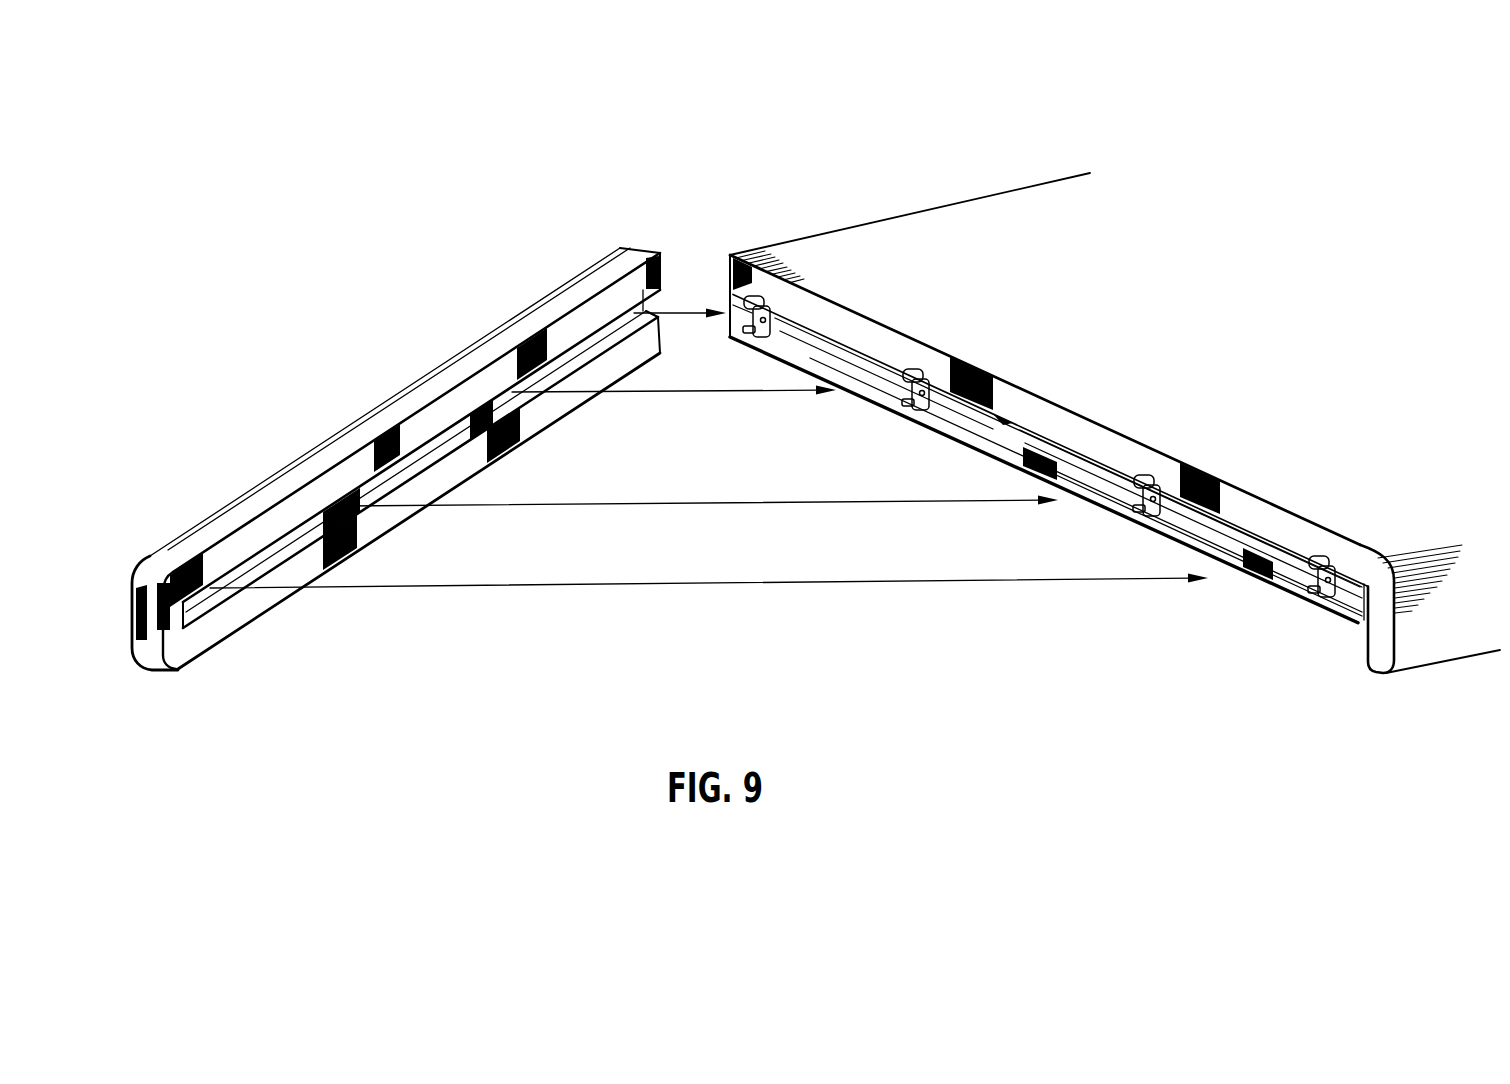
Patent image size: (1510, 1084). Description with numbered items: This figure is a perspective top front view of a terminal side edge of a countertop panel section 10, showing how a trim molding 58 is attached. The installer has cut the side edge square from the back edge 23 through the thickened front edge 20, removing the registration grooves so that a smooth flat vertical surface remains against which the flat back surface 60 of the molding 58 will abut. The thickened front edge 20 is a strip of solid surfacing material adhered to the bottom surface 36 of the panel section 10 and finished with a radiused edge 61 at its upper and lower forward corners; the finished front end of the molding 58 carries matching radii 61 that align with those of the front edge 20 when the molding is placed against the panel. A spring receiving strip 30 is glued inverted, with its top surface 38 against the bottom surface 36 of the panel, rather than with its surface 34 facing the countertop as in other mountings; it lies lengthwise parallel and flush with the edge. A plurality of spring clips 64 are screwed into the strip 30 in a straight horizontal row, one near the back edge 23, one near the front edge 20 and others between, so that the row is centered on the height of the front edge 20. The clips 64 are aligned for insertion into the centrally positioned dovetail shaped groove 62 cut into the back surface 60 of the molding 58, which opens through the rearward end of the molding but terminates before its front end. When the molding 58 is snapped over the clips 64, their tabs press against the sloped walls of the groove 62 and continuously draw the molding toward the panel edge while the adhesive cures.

The panel section 10 is at (1122, 388).
The thickened front edge 20 is at (1437, 637).
The back edge 23 is at (862, 223).
The spring receiving strip 30 is at (948, 433).
The surface 34 is at (1273, 580).
The bottom surface 36 is at (1240, 520).
The top surface of strip 38 is at (1290, 550).
The trim molding 58 is at (335, 433).
The back surface 60 is at (517, 363).
The radiused edge 61 is at (136, 568).
The dovetail shaped groove 62 is at (193, 607).
The spring clip 64 is at (1125, 512).